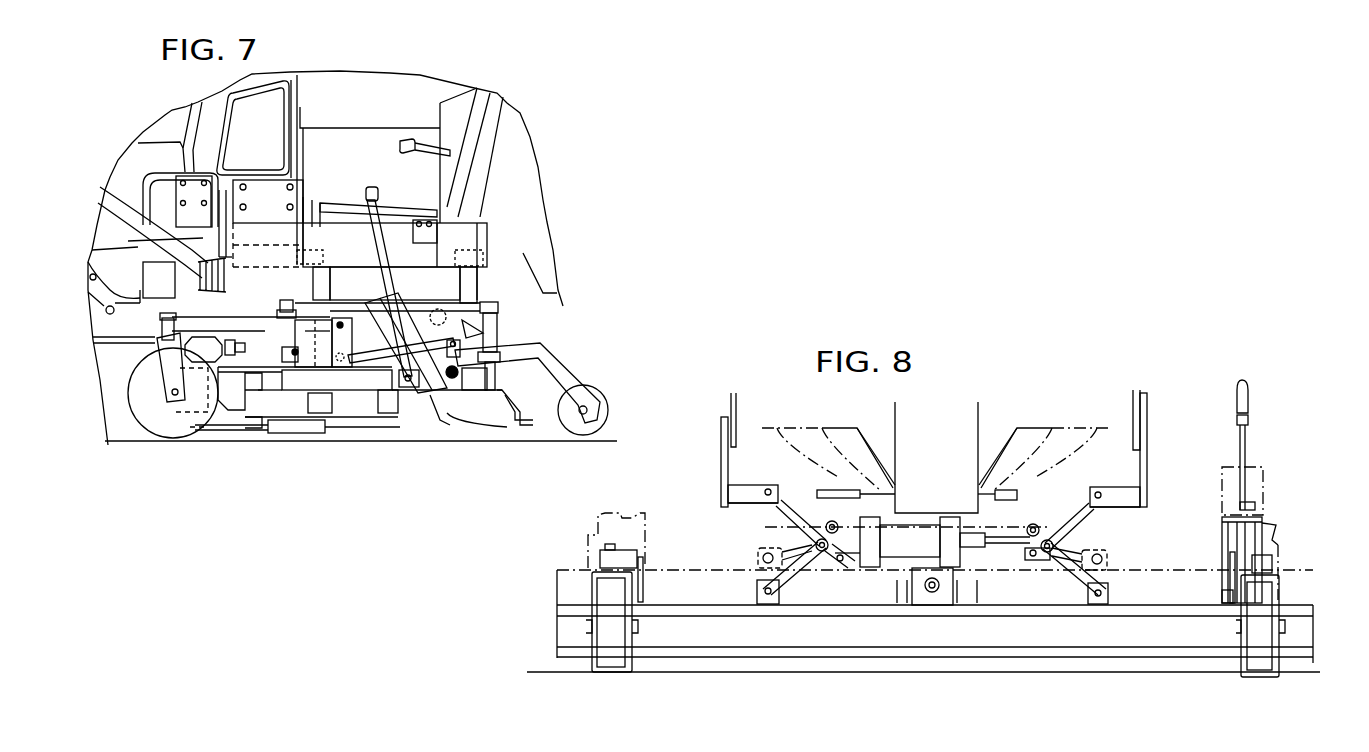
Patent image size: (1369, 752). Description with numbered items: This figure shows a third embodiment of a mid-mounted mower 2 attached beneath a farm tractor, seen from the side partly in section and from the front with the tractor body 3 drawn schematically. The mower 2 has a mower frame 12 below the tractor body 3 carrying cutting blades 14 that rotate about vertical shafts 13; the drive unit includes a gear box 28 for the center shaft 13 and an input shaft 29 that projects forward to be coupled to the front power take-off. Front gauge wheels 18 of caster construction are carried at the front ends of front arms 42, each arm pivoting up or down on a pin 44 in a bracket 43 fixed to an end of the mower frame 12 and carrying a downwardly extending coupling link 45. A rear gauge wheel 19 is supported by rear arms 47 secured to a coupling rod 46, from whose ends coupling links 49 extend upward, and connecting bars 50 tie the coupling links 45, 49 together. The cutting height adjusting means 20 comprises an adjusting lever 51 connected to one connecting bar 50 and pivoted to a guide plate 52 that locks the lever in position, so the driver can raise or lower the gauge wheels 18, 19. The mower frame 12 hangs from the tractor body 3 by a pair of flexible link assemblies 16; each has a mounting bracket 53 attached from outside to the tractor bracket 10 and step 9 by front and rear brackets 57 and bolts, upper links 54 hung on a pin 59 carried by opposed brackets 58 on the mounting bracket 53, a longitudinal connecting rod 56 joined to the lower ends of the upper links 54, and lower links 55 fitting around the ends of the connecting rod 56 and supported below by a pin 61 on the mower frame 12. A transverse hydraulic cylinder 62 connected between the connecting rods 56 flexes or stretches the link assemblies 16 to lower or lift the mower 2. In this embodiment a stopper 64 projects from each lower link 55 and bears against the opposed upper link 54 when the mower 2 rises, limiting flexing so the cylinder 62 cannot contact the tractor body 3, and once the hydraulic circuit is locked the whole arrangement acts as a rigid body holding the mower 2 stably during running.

In FIG. 7, the mid-mounted mower 2 is at (376, 436).
In FIG. 8, the mid-mounted mower 2 is at (861, 674).
In FIG. 7, the tractor body 3 is at (358, 158).
In FIG. 7, the steps 9 is at (421, 215).
In FIG. 8, the brackets 10 is at (736, 403).
In FIG. 7, the mower frame 12 is at (233, 380).
In FIG. 8, the mower frame 12 is at (1015, 640).
In FIG. 7, the vertical shafts 13 is at (416, 430).
In FIG. 8, the vertical shafts 13 is at (970, 418).
In FIG. 7, the cutting blades 14 is at (217, 435).
In FIG. 7, the flexible link assemblies 16 is at (490, 296).
In FIG. 8, the flexible link assemblies 16 is at (790, 535).
In FIG. 7, the front gauge wheels 18 is at (152, 412).
In FIG. 8, the front gauge wheels 18 is at (600, 592).
In FIG. 7, the rear gauge wheel 19 is at (607, 405).
In FIG. 8, the cutting height adjusting means 20 is at (1285, 486).
In FIG. 8, the gear box 28 is at (938, 600).
In FIG. 7, the input shaft 29 is at (245, 340).
In FIG. 8, the input shaft 29 is at (955, 585).
In FIG. 7, the front arm 42 is at (185, 322).
In FIG. 7, the bracket 43 is at (340, 375).
In FIG. 8, the bracket 43 is at (644, 580).
In FIG. 7, the pin 44 is at (350, 333).
In FIG. 7, the coupling link 45 is at (405, 406).
In FIG. 7, the coupling rod 46 is at (492, 395).
In FIG. 7, the rear arms 47 is at (570, 380).
In FIG. 7, the coupling links 49 is at (470, 368).
In FIG. 7, the connecting bars 50 is at (466, 418).
In FIG. 7, the adjusting lever 51 is at (385, 190).
In FIG. 8, the adjusting lever 51 is at (1247, 442).
In FIG. 7, the guide plate 52 is at (425, 395).
In FIG. 8, the guide plate 52 is at (1258, 508).
In FIG. 7, the mounting bracket 53 is at (338, 247).
In FIG. 8, the mounting bracket 53 is at (728, 493).
In FIG. 7, the upper links 54 is at (307, 282).
In FIG. 8, the upper links 54 is at (803, 524).
In FIG. 7, the lower links 55 is at (290, 306).
In FIG. 8, the lower links 55 is at (808, 558).
In FIG. 7, the connecting rod 56 is at (355, 305).
In FIG. 8, the connecting rod 56 is at (835, 554).
In FIG. 7, the front and rear brackets 57 is at (292, 200).
In FIG. 8, the front and rear brackets 57 is at (721, 460).
In FIG. 8, the opposed brackets 58 is at (750, 503).
In FIG. 7, the pin 59 is at (290, 250).
In FIG. 8, the pin 59 is at (767, 489).
In FIG. 7, the pin 61 is at (300, 377).
In FIG. 8, the pin 61 is at (757, 590).
In FIG. 7, the hydraulic cylinder 62 is at (440, 308).
In FIG. 8, the hydraulic cylinder 62 is at (938, 545).
In FIG. 7, the stoppers 64 is at (498, 330).
In FIG. 8, the stoppers 64 is at (762, 562).